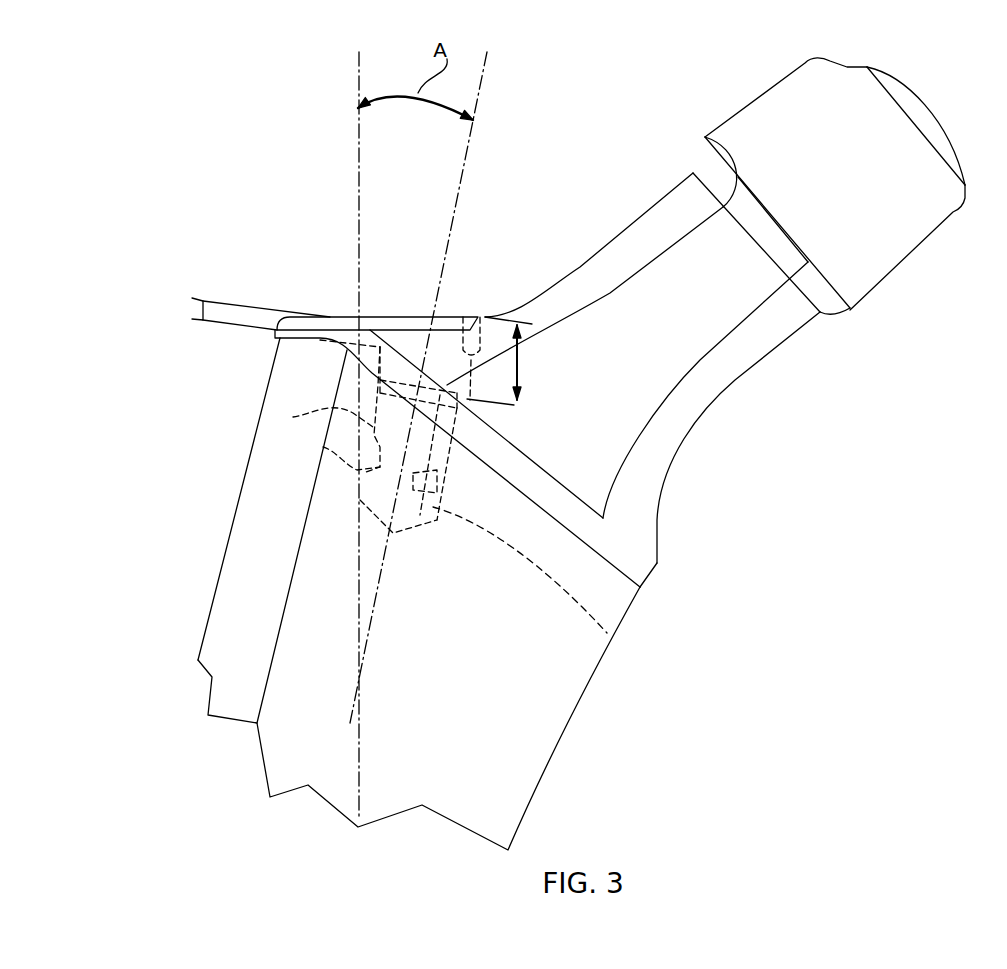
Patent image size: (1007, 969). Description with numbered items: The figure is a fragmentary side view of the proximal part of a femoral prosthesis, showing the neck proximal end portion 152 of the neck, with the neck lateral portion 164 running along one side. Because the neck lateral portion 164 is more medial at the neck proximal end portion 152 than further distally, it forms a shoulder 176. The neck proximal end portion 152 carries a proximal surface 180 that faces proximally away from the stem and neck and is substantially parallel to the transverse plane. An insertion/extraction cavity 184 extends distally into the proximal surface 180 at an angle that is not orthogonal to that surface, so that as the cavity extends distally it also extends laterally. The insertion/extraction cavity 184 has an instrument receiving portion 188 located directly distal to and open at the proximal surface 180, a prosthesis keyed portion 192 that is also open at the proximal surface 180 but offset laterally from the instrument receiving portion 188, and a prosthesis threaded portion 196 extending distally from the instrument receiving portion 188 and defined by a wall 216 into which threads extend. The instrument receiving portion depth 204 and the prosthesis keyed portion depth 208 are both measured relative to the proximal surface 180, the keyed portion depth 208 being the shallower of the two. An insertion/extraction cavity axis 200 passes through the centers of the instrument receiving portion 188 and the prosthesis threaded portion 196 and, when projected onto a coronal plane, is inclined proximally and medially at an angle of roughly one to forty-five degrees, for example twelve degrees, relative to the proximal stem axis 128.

The proximal stem axis 128 is at (357, 73).
The insertion/extraction cavity axis 200 is at (486, 90).
The neck proximal end portion 152 is at (597, 472).
The neck lateral portion 164 is at (258, 655).
The shoulder 176 is at (233, 530).
The proximal surface 180 is at (336, 314).
The insertion/extraction cavity 184 is at (466, 496).
The instrument receiving portion 188 is at (478, 312).
The prosthesis keyed portion 192 is at (372, 325).
The prosthesis threaded portion 196 is at (323, 447).
The instrument receiving portion depth 204 is at (517, 371).
The prosthesis keyed portion depth 208 is at (193, 302).
The wall 216 is at (293, 417).